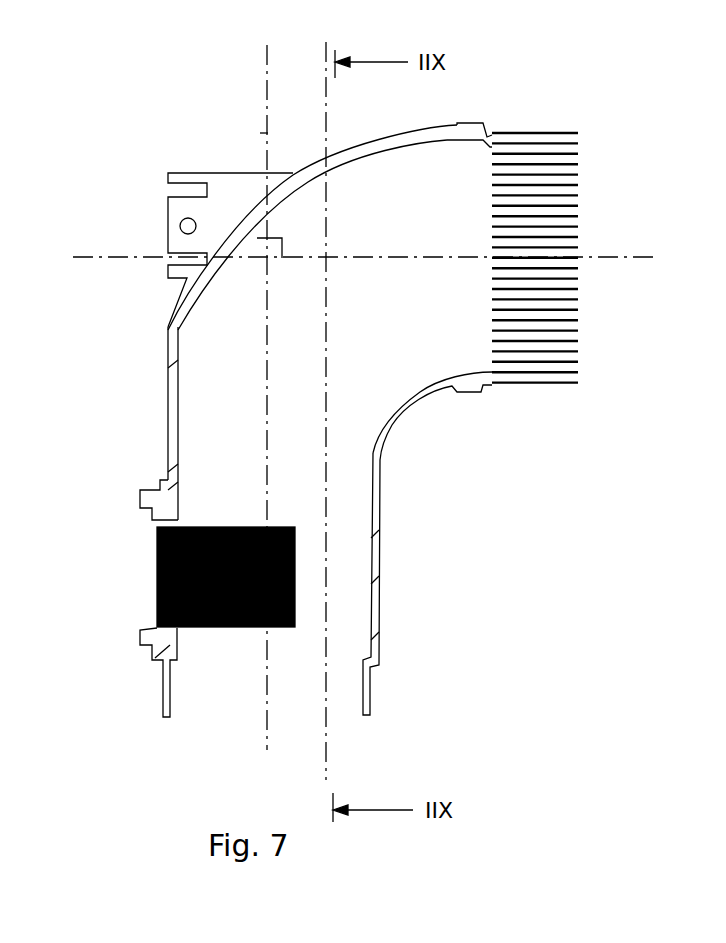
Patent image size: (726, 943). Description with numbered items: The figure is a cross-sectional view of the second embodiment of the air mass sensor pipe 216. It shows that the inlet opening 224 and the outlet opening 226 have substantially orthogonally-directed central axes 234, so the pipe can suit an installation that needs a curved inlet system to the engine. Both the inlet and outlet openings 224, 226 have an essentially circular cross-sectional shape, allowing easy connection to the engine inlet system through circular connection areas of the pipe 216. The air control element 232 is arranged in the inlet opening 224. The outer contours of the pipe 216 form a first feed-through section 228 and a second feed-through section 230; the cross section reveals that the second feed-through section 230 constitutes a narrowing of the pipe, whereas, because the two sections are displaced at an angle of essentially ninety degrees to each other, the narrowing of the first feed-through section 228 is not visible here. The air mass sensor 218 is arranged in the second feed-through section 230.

The air mass sensor pipe 216 is at (443, 397).
The air mass sensor 218 is at (215, 527).
The inlet opening 224 is at (573, 150).
The outlet opening 226 is at (168, 705).
The first feed-through section 228 is at (360, 440).
The second feed-through section 230 is at (178, 460).
The air control element 232 is at (577, 188).
The central axes 234 is at (268, 132).